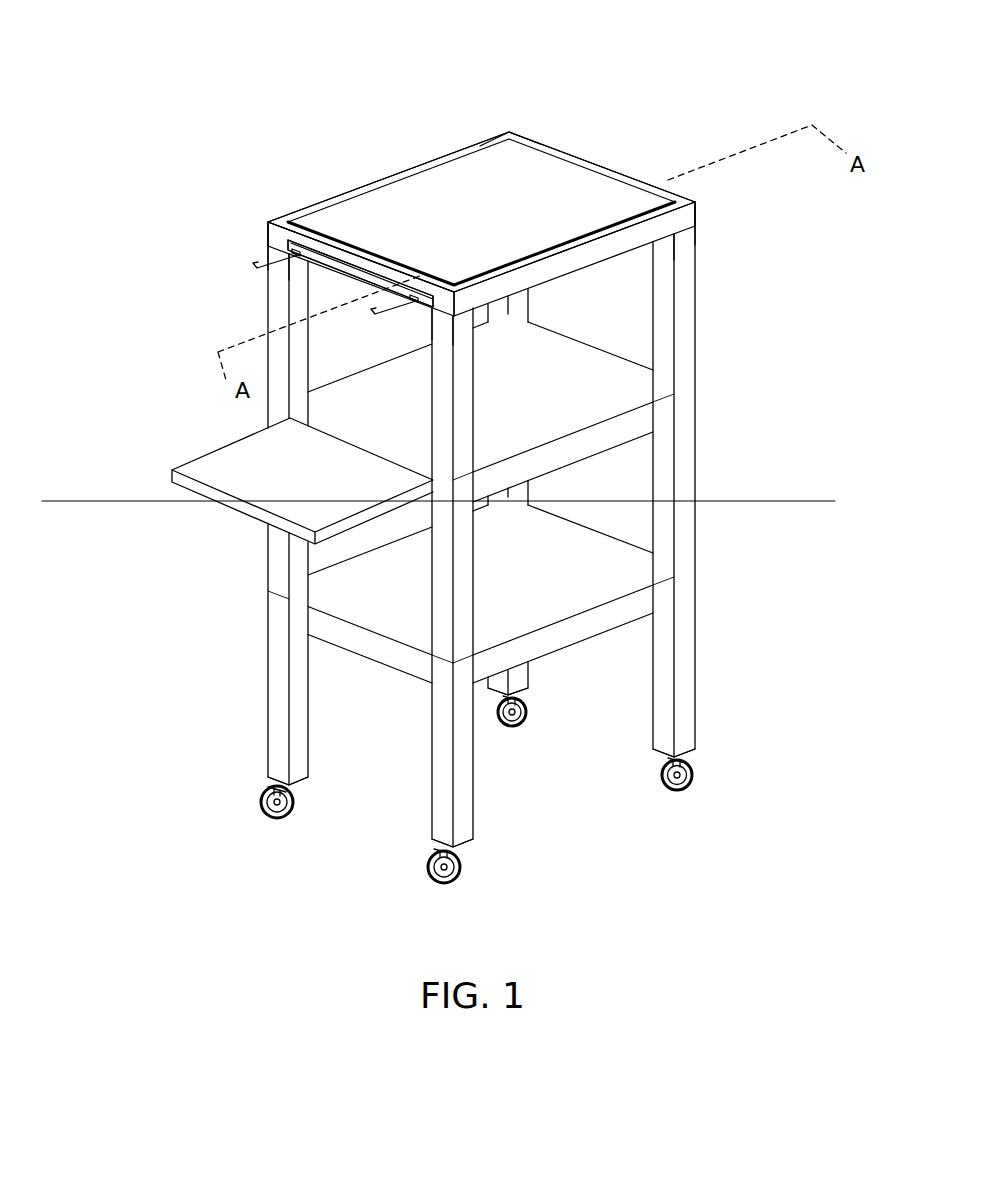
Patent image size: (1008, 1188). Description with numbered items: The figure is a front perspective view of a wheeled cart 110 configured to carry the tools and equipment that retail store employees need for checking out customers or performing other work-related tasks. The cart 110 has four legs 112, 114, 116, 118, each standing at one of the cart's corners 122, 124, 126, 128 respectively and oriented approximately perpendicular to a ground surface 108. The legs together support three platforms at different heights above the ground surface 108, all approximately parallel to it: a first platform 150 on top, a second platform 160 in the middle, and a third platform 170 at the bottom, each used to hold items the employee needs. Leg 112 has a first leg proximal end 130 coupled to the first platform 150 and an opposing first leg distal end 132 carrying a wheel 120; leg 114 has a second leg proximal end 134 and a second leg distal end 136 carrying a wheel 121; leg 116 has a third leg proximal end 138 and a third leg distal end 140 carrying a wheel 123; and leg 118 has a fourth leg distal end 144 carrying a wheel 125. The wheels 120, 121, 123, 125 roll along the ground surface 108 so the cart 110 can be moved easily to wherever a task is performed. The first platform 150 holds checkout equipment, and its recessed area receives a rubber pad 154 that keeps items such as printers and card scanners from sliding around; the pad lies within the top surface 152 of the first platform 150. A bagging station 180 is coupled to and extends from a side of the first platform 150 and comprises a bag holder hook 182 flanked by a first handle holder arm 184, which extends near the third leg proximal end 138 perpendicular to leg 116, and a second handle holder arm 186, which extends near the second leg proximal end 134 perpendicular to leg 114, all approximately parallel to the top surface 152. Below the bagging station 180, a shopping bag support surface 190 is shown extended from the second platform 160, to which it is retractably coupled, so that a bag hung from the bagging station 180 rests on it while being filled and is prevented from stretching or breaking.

The ground surface 108 is at (788, 515).
The wheeled cart 110 is at (398, 78).
The leg 112 is at (683, 510).
The leg 114 is at (440, 770).
The leg 116 is at (270, 567).
The leg 118 is at (530, 304).
The wheel 120 is at (690, 785).
The wheel 121 is at (452, 880).
The corner 122 is at (707, 195).
The wheel 123 is at (265, 808).
The corner 124 is at (452, 280).
The wheel 125 is at (521, 722).
The corner 126 is at (262, 216).
The corner 128 is at (515, 117).
The first leg proximal end 130 is at (700, 207).
The first leg distal end 132 is at (688, 750).
The second leg proximal end 134 is at (445, 308).
The second leg distal end 136 is at (462, 845).
The third leg proximal end 138 is at (270, 240).
The third leg distal end 140 is at (268, 786).
The fourth leg distal end 144 is at (522, 690).
The first platform 150 is at (588, 166).
The top surface 152 is at (501, 209).
The rubber pad 154 is at (335, 215).
The second platform 160 is at (542, 427).
The third platform 170 is at (540, 585).
The bagging station 180 is at (256, 300).
The bag holder hook 182 is at (353, 280).
The first handle holder arm 184 is at (260, 266).
The second handle holder arm 186 is at (392, 312).
The shopping bag support surface 190 is at (222, 467).